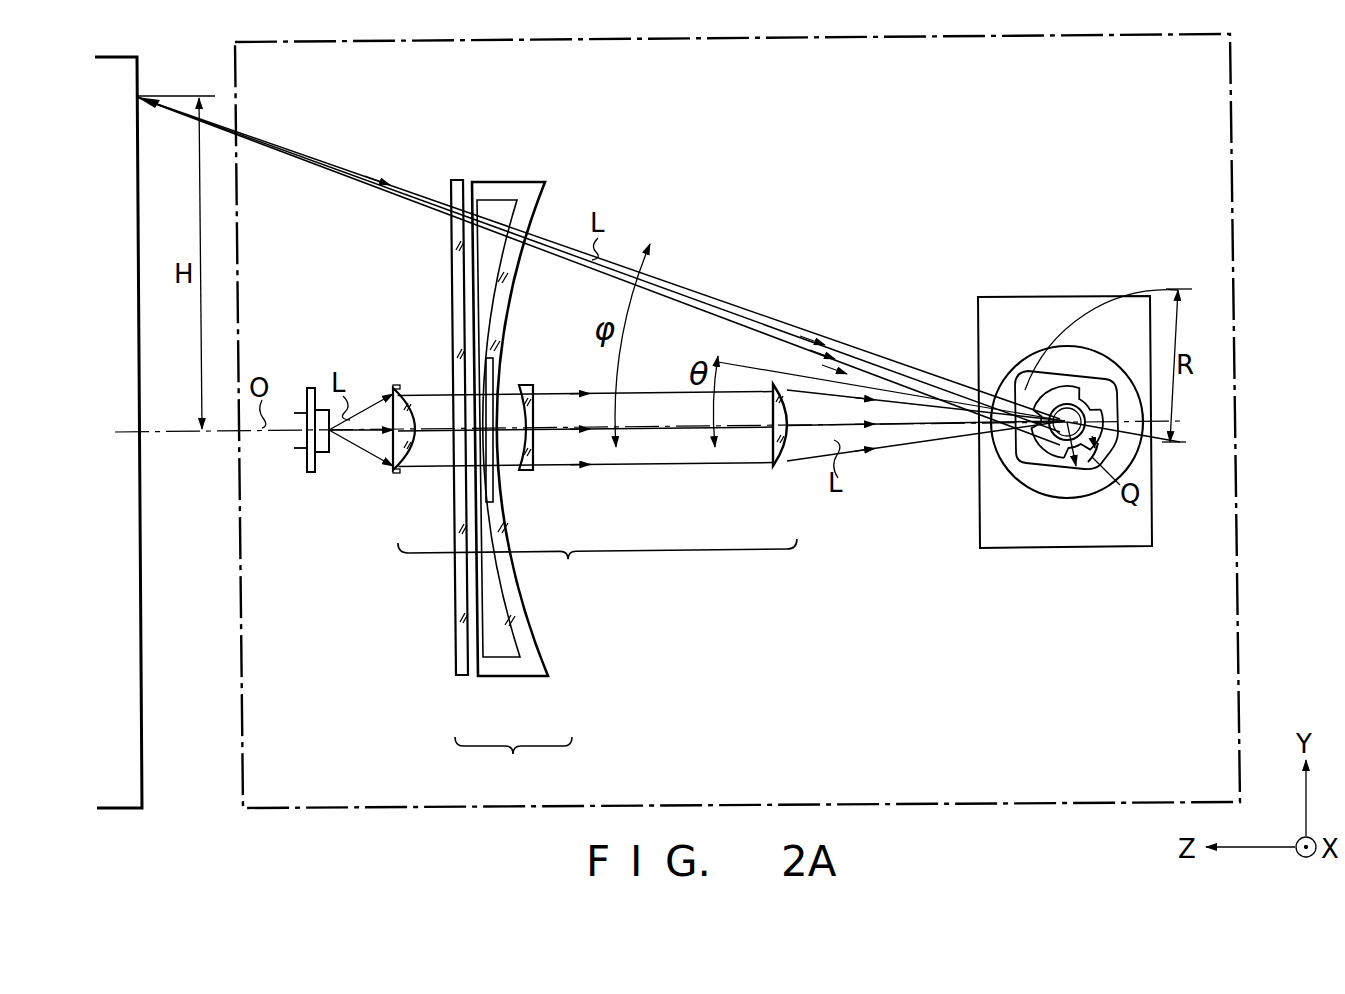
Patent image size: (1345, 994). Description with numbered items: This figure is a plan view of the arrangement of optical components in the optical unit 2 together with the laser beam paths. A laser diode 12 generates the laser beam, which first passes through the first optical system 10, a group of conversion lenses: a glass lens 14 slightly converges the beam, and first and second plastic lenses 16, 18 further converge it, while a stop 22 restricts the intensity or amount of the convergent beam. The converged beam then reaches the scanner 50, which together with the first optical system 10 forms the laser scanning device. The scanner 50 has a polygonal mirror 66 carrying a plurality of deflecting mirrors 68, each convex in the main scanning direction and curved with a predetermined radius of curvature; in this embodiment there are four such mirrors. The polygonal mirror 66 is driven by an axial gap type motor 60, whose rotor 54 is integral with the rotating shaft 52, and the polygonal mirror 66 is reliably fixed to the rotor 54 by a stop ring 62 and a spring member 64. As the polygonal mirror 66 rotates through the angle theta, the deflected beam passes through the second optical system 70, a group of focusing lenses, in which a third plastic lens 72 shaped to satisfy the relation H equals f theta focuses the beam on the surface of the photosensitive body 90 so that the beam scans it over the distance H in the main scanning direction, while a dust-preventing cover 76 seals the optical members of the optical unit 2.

The optical unit 2 is at (1233, 90).
The first optical system 10 is at (597, 565).
The laser diode 12 is at (307, 474).
The glass lens 14 is at (397, 473).
The first plastic lens 16 is at (533, 471).
The second plastic lens 18 is at (778, 468).
The stop 22 is at (494, 363).
The scanner 50 is at (1032, 297).
The rotating shaft 52 is at (1073, 414).
The rotor 54 is at (1096, 486).
The axial gap type motor 60 is at (1015, 372).
The stop ring 62 is at (1083, 398).
The spring member 64 is at (1115, 442).
The polygonal mirror 66 is at (1060, 462).
The deflecting mirror 68 is at (1015, 468).
The second optical system 70 is at (513, 762).
The third plastic lens 72 is at (540, 677).
The dust-preventing cover 76 is at (462, 677).
The photosensitive body 90 is at (142, 770).